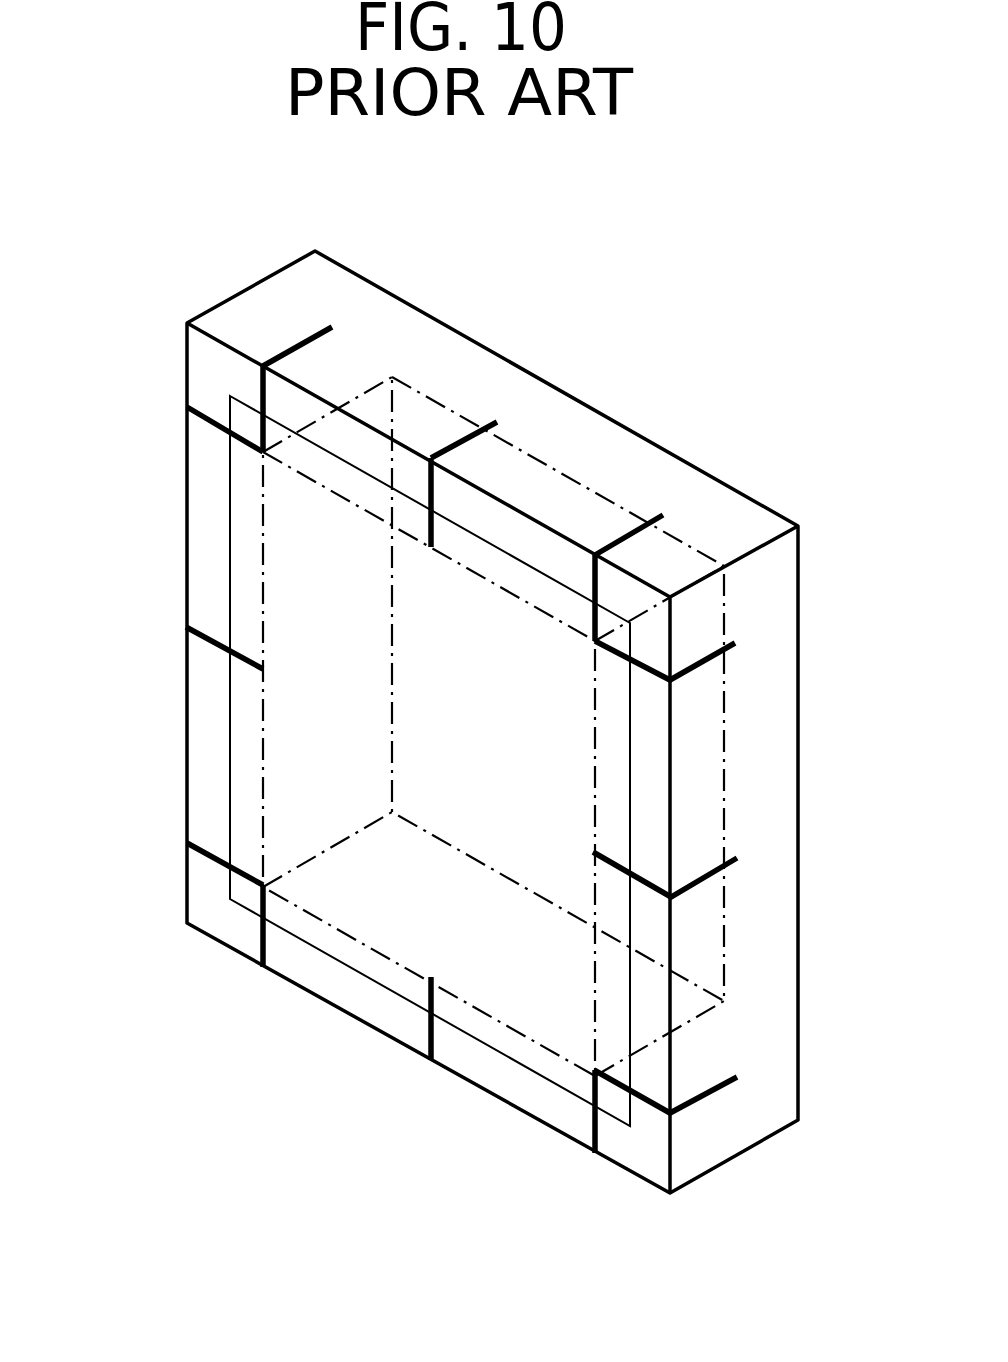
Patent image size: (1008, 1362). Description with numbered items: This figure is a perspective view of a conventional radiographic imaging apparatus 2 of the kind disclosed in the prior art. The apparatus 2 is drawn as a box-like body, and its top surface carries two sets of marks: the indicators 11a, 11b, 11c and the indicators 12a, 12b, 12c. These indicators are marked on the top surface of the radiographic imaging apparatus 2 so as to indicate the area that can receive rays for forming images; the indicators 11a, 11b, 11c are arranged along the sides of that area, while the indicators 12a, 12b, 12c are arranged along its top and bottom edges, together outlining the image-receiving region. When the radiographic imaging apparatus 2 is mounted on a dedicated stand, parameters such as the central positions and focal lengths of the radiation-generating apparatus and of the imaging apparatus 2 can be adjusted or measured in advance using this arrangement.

The radiographic imaging apparatus 2 is at (491, 366).
The indicator 11a is at (205, 420).
The indicator 11b is at (205, 643).
The indicator 11c is at (213, 862).
The indicator 12a is at (260, 403).
The indicator 12b is at (433, 490).
The indicator 12c is at (600, 587).